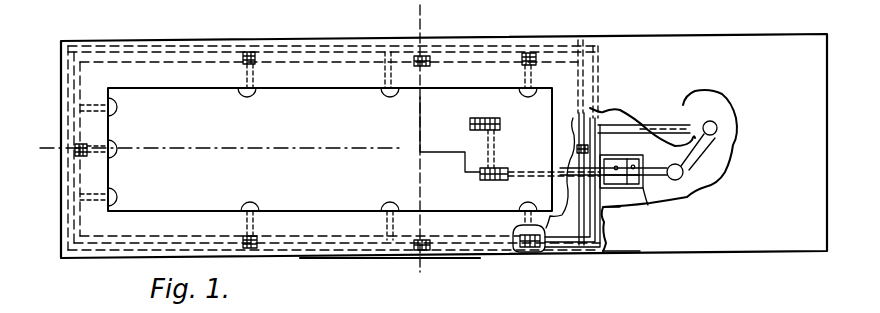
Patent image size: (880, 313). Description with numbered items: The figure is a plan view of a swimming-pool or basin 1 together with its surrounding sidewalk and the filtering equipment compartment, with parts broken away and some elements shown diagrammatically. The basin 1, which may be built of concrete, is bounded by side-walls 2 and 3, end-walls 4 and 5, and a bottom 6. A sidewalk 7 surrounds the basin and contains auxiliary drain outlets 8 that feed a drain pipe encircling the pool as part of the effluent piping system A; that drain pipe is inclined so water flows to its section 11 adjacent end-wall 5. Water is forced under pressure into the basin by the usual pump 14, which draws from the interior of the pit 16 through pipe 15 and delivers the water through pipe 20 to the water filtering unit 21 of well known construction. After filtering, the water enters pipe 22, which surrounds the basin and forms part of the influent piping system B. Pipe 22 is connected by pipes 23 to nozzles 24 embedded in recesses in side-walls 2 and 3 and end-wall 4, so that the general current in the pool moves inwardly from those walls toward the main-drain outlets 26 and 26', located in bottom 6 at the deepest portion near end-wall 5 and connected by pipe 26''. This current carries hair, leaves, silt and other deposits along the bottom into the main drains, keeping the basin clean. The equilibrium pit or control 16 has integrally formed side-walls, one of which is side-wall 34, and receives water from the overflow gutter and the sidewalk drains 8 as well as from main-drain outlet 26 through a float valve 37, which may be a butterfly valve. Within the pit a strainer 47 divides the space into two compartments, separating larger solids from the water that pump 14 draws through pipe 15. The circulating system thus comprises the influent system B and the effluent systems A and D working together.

The swimming-pool or basin 1 is at (390, 258).
The side-wall 2 is at (292, 95).
The side-wall 3 is at (295, 210).
The end-wall 4 is at (108, 128).
The end-wall 5 is at (552, 107).
The bottom 6 is at (450, 142).
The sidewalk 7 is at (105, 259).
The side-walk or auxiliary drain outlets 8 is at (250, 52).
The section of the pipe 11 is at (583, 137).
The pump 14 is at (672, 183).
The pipe 15 is at (660, 190).
The pit 16 is at (645, 190).
The pipe 20 is at (703, 176).
The water filtering unit 21 is at (717, 125).
The pipe 22 is at (620, 118).
The pipes 23 is at (540, 249).
The nozzles 24 is at (520, 212).
The main-drain outlet 26 is at (458, 121).
The main-drain outlet 26' is at (523, 182).
The pipe 26'' is at (456, 149).
The side-wall of pit 34 is at (624, 190).
The float valve 37 is at (612, 166).
The strainer 47 is at (643, 233).
The effluent piping system A is at (574, 238).
The influent piping system B is at (593, 246).
The effluent system D is at (561, 173).